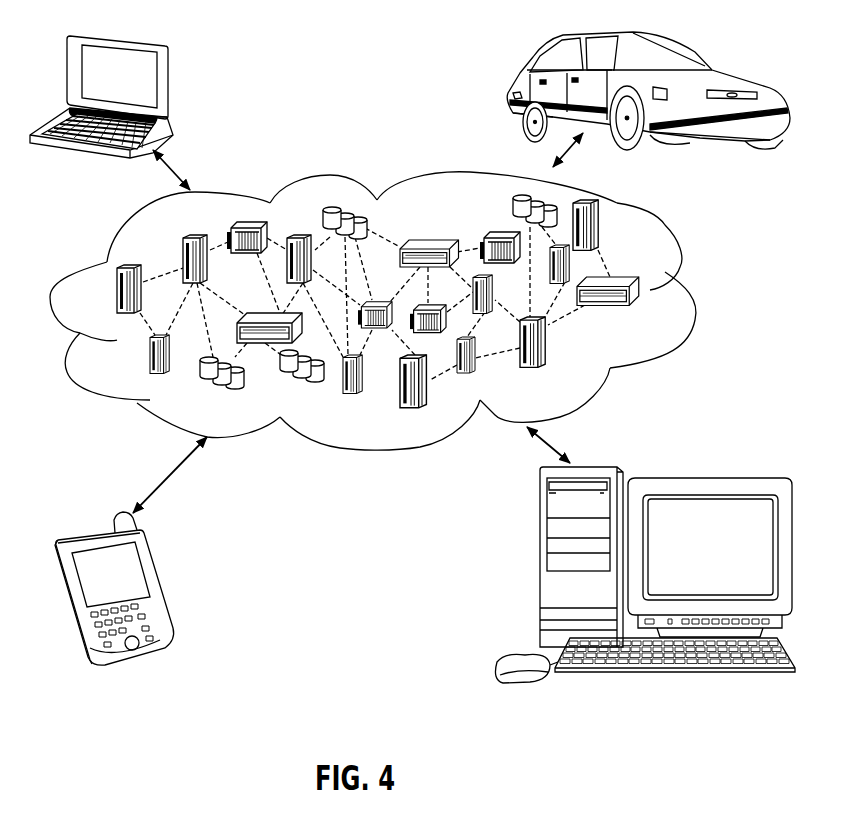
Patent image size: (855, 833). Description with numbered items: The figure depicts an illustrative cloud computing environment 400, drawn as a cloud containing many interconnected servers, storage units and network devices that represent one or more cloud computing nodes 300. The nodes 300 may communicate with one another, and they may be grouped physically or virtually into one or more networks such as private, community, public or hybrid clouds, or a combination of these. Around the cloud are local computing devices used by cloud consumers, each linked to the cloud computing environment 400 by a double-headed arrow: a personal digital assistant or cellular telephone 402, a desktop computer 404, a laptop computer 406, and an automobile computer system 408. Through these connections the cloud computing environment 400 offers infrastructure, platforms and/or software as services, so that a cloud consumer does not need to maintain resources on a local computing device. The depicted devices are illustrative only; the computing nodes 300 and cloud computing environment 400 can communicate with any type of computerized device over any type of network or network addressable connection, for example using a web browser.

The cloud computing node 300 is at (672, 316).
The cloud computing environment 400 is at (683, 267).
The personal digital assistant or cellular telephone 402 is at (160, 583).
The desktop computer 404 is at (540, 565).
The laptop computer 406 is at (170, 80).
The automobile computer system 408 is at (520, 80).